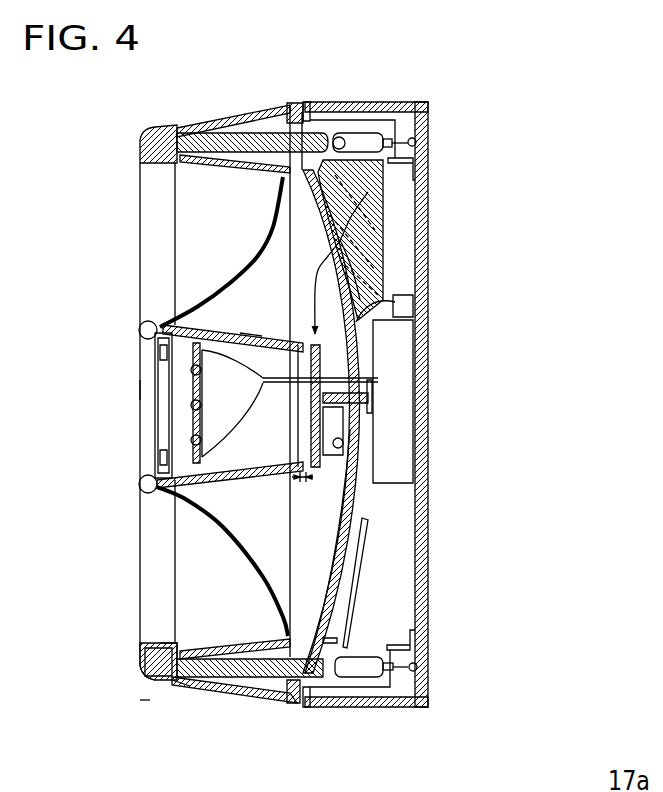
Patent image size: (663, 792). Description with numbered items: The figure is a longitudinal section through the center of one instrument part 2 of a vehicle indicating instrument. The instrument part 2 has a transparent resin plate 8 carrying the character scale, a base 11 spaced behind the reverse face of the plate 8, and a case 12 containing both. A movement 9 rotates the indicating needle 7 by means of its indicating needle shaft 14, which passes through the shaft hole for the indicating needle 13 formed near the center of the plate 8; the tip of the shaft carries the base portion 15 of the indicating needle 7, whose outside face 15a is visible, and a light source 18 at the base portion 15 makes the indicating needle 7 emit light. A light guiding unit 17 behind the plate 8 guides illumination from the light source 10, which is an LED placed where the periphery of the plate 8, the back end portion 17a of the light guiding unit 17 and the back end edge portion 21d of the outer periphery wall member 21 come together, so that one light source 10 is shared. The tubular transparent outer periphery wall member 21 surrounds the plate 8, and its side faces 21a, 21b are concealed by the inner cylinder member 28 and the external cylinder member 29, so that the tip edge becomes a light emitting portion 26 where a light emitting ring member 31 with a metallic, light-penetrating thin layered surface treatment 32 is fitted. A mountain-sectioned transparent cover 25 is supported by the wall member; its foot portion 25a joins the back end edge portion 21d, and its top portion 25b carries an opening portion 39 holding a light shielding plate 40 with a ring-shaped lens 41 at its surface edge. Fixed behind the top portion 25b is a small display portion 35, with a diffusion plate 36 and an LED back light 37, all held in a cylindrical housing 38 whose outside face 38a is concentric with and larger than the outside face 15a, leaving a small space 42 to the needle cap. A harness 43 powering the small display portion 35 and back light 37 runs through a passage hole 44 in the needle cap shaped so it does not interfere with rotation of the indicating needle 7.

The instrument part 2 is at (135, 729).
The indicating needle 7 is at (355, 483).
The plate 8 is at (347, 575).
The movement 9 is at (400, 350).
The light source 10 is at (360, 140).
The base 11 is at (430, 128).
The case 12 is at (428, 655).
The shaft hole for indicating needle 13 is at (355, 412).
The indicating needle shaft 14 is at (360, 400).
The base portion 15 is at (330, 243).
The outside face of base portion 15a is at (357, 280).
The light guiding unit 17 is at (383, 203).
The back end portion of light guiding unit 17a is at (343, 140).
The light source 18 is at (348, 447).
The outer periphery wall member 21 is at (210, 678).
The side face of outer periphery wall member 21a is at (247, 650).
The side face of outer periphery wall member 21b is at (247, 688).
The back end edge portion of outer periphery wall member 21d is at (334, 690).
The transparent cover 25 is at (205, 300).
The foot portion of transparent cover 25a is at (268, 684).
The top portion of transparent cover 25b is at (130, 388).
The light emitting portion 26 is at (150, 677).
The inner cylinder member 28 is at (173, 640).
The external cylinder member 29 is at (193, 687).
The light emitting ring member 31 is at (133, 640).
The thin layered surface treatment 32 is at (137, 667).
The small display portion 35 is at (175, 405).
The diffusion plate 36 is at (185, 430).
The back light 37 is at (165, 440).
The housing 38 is at (220, 328).
The outside face of housing 38a is at (252, 337).
The opening portion 39 is at (142, 333).
The light shielding plate 40 is at (155, 372).
The lens 41 is at (150, 340).
The small space 42 is at (303, 482).
The harness 43 is at (405, 300).
The passage hole 44 is at (365, 380).